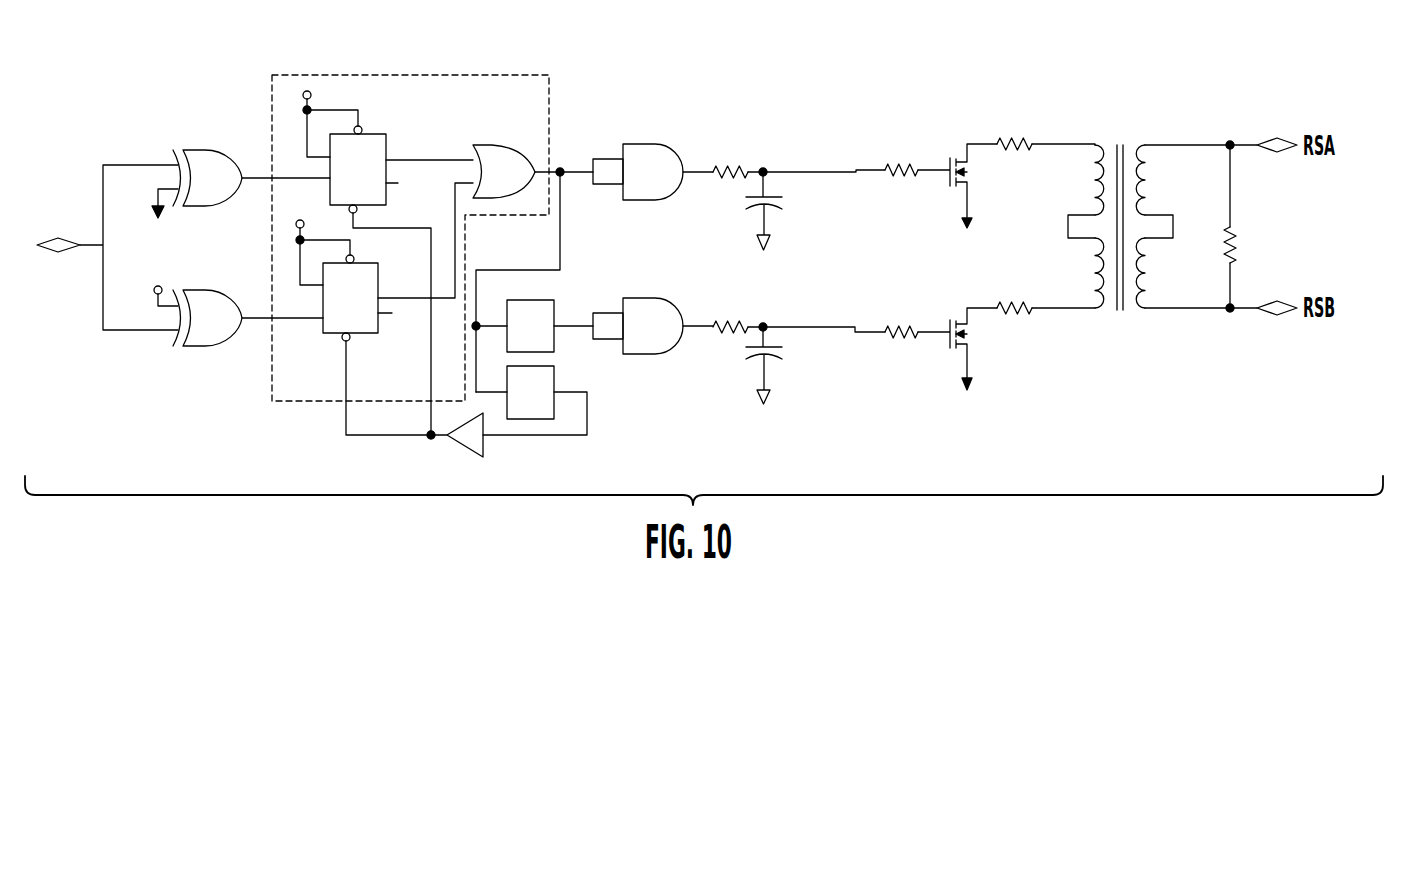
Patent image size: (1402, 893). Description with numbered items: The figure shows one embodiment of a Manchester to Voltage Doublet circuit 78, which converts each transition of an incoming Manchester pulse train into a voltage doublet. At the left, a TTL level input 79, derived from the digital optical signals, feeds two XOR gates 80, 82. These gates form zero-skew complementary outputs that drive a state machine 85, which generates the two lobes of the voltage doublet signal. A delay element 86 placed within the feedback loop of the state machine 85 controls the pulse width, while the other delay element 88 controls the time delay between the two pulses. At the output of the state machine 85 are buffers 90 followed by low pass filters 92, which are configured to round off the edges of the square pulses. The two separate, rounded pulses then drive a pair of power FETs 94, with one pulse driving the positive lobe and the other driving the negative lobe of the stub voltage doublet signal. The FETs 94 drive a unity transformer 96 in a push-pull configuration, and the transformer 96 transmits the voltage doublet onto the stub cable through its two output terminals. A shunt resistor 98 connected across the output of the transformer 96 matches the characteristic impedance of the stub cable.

The Manchester to Voltage Doublet circuit 78 is at (123, 376).
The TTL level input 79 is at (63, 240).
The XOR gate 80 is at (200, 147).
The XOR gate 82 is at (200, 289).
The state machine 85 is at (550, 103).
The delay element 86 is at (555, 380).
The delay element 88 is at (555, 306).
The buffer 90 is at (660, 162).
The low pass filter 92 is at (765, 163).
The power FET 94 is at (962, 207).
The unity transformer 96 is at (1121, 318).
The shunt resistor 98 is at (1235, 263).